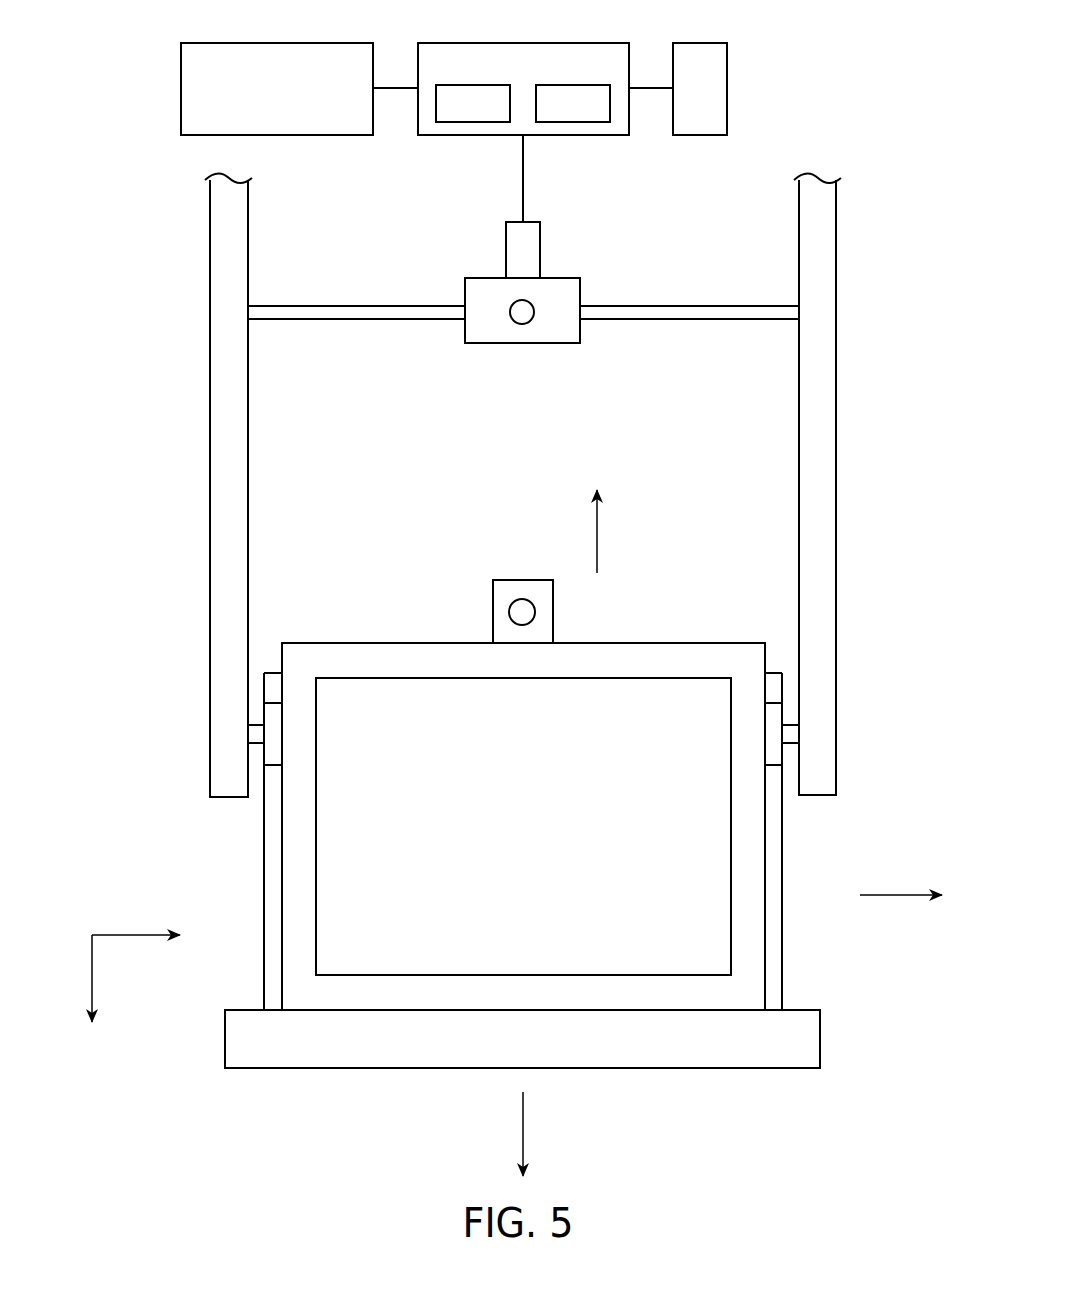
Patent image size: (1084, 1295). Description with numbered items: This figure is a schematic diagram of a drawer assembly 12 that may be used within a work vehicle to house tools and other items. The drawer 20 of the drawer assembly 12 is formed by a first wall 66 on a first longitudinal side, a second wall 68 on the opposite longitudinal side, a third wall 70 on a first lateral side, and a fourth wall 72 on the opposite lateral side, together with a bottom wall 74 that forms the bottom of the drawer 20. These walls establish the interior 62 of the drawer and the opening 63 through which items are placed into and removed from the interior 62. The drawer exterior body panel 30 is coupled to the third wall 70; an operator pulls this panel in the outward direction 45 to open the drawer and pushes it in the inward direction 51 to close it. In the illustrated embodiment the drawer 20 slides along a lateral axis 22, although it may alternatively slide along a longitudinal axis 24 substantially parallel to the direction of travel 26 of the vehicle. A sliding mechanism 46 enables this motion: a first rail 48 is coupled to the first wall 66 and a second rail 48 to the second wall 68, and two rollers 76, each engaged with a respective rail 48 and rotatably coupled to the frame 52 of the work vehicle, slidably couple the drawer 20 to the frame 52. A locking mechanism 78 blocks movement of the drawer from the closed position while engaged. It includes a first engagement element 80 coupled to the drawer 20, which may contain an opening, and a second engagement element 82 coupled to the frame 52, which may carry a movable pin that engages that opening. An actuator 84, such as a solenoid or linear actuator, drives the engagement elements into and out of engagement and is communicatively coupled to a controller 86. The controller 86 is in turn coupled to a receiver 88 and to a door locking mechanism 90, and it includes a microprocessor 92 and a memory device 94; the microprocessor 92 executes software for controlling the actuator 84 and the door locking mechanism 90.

The drawer assembly 12 is at (827, 958).
The drawer 20 is at (395, 693).
The lateral axis 22 is at (92, 975).
The longitudinal axis 24 is at (128, 935).
The direction of travel 26 is at (897, 895).
The drawer exterior body panel 30 is at (380, 1050).
The outward direction 45 is at (523, 1127).
The sliding mechanism 46 is at (244, 825).
The rail 48 is at (272, 902).
The inward direction 51 is at (597, 537).
The frame 52 is at (223, 492).
The interior 62 is at (590, 716).
The opening 63 is at (685, 805).
The first wall 66 is at (748, 819).
The second wall 68 is at (300, 850).
The third wall 70 is at (540, 990).
The fourth wall 72 is at (642, 655).
The bottom wall 74 is at (700, 705).
The roller 76 is at (267, 718).
The locking mechanism 78 is at (567, 367).
The first engagement element 80 is at (540, 580).
The second engagement element 82 is at (523, 343).
The actuator 84 is at (540, 250).
The controller 86 is at (523, 43).
The receiver 88 is at (700, 43).
The door locking mechanism 90 is at (277, 43).
The microprocessor 92 is at (474, 122).
The memory device 94 is at (572, 122).